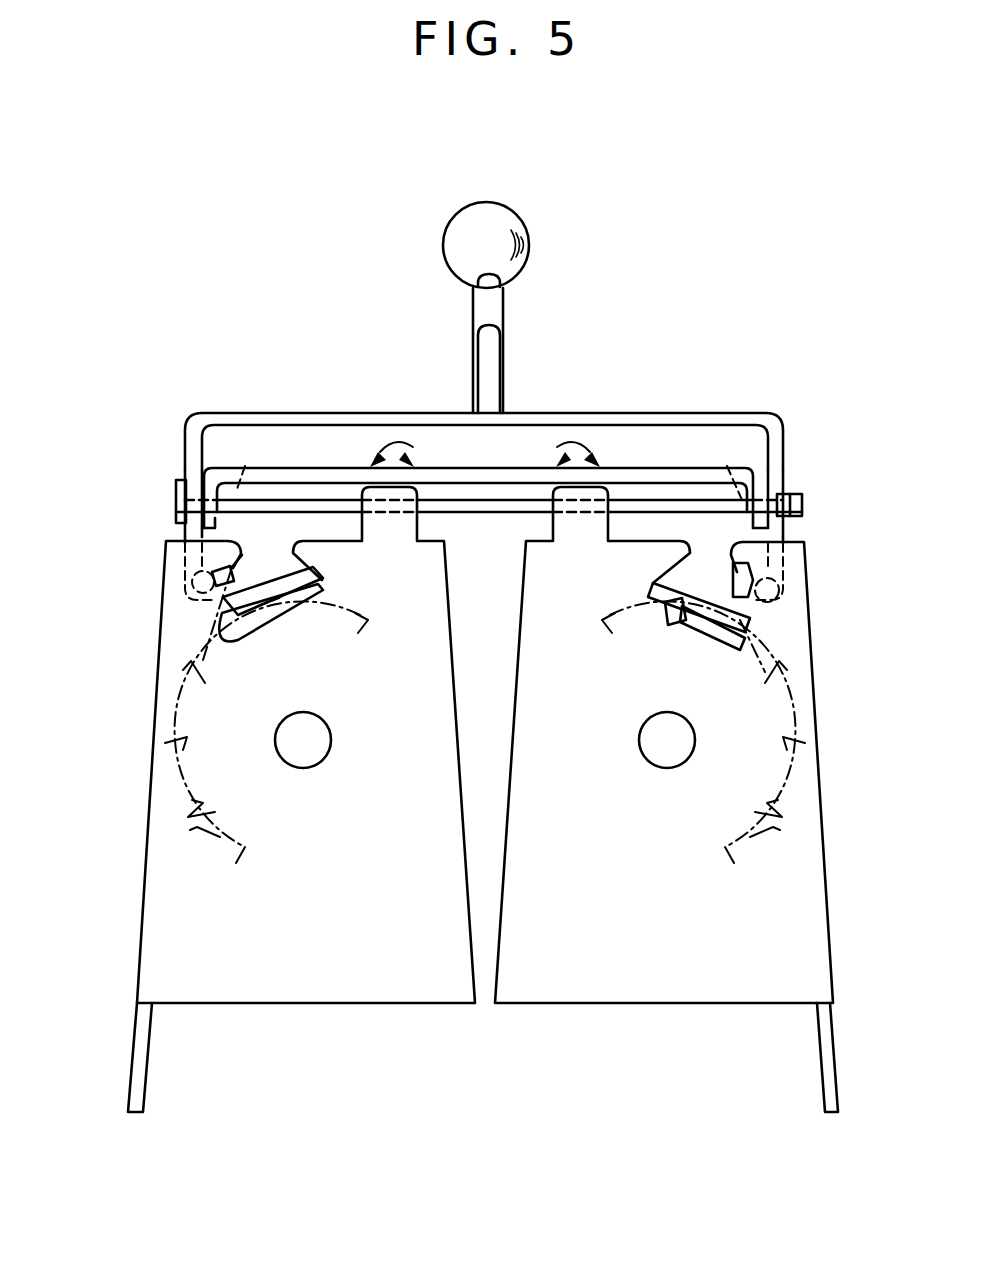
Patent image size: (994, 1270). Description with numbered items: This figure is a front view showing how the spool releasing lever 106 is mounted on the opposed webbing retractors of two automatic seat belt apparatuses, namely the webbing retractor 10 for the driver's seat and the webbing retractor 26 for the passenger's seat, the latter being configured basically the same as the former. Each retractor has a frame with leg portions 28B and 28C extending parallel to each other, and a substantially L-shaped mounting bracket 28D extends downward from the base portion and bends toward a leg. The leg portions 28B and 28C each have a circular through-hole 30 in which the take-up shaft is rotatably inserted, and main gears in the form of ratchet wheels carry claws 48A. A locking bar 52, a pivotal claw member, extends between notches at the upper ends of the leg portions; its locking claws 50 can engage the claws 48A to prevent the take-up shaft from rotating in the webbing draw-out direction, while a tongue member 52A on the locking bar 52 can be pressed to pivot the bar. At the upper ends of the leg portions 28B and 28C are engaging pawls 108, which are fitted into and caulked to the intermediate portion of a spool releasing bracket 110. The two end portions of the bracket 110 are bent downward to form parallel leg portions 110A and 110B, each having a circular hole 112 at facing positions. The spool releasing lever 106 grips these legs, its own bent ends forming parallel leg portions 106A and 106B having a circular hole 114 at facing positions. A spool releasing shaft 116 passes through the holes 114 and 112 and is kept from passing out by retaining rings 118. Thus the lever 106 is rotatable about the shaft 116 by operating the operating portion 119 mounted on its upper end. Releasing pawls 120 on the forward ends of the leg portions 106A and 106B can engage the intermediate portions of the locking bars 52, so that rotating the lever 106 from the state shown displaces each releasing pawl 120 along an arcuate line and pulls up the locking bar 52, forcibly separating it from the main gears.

The webbing retractor 10 is at (814, 413).
The webbing retractor 26 is at (456, 826).
The leg portion 28B is at (317, 993).
The leg portion 28C is at (668, 995).
The mounting bracket 28D is at (143, 1085).
The circular through-hole 30 is at (312, 752).
The claws 48A is at (193, 840).
The locking claws 50 is at (222, 622).
The locking bar 52 is at (300, 553).
The tongue member 52A is at (672, 623).
The spool releasing lever 106 is at (688, 412).
The leg portion 106A is at (192, 449).
The leg portion 106B is at (782, 450).
The engaging pawls 108 is at (563, 447).
The spool releasing bracket 110 is at (490, 468).
The leg portion 110A is at (218, 524).
The leg portion 110B is at (733, 528).
The circular hole 112 is at (494, 471).
The circular hole 114 is at (176, 510).
The spool releasing shaft 116 is at (308, 493).
The retaining rings 118 is at (803, 517).
The operating portion 119 is at (531, 247).
The releasing pawls 120 is at (200, 580).